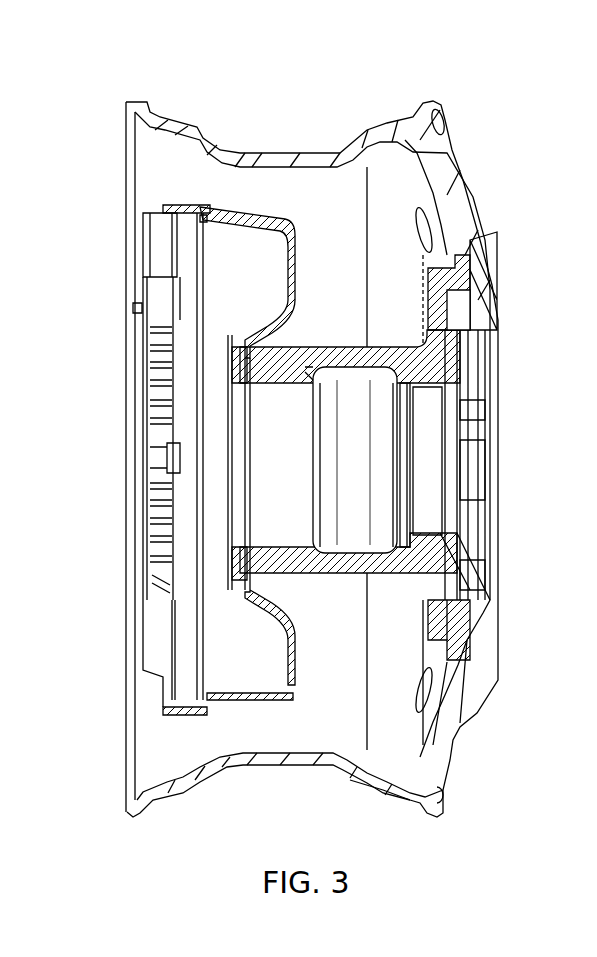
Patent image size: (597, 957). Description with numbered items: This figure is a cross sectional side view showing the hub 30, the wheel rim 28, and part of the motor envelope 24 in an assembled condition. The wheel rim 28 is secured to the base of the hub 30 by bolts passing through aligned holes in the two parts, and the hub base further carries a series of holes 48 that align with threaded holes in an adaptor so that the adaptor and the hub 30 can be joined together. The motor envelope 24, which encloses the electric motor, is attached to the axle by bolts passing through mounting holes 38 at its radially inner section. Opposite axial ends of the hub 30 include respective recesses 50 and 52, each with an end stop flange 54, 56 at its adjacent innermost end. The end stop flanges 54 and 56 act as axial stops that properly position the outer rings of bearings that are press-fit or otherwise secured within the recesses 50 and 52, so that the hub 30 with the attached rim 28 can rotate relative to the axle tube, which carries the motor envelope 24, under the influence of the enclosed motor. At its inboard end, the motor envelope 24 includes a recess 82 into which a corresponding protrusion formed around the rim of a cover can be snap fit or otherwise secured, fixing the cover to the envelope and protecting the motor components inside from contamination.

The motor envelope 24 is at (232, 705).
The wheel rim 28 is at (255, 153).
The hub 30 is at (335, 570).
The mounting holes 38 is at (250, 388).
The holes 48 is at (437, 312).
The recess 50 is at (300, 460).
The recess 52 is at (430, 425).
The end stop flange 54 is at (320, 378).
The end stop flange 56 is at (400, 522).
The recess 82 is at (207, 212).